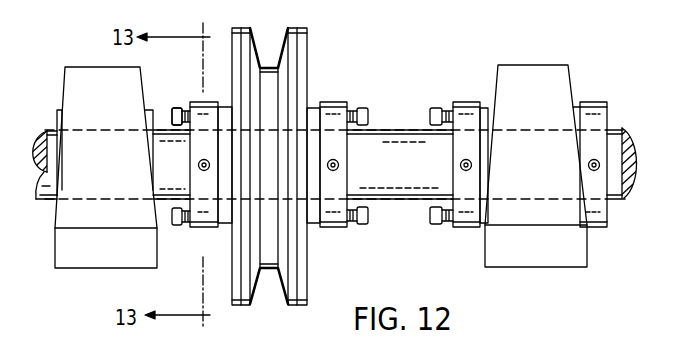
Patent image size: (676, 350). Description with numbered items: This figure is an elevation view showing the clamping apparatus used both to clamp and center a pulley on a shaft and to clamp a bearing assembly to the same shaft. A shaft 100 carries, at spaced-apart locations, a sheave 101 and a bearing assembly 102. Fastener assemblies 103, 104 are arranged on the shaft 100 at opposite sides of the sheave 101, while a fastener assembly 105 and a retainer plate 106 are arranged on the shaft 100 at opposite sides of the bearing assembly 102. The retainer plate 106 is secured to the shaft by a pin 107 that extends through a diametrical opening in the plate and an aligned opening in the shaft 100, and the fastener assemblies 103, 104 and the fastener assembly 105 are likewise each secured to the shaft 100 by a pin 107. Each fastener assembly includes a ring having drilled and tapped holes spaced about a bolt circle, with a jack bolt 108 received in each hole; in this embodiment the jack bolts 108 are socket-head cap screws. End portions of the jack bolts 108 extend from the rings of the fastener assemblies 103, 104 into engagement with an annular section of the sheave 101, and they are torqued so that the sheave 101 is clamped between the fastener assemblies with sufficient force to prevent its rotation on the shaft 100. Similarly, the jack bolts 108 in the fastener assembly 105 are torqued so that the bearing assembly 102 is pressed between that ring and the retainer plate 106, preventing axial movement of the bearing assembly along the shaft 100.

The shaft 100 is at (408, 201).
The sheave 101 is at (307, 55).
The bearing assembly 102 is at (525, 64).
The fastener assembly 103 is at (207, 228).
The fastener assembly 104 is at (340, 102).
The fastener assembly 105 is at (465, 102).
The retainer plate 106 is at (592, 103).
The pin 107 is at (198, 167).
The jack bolt 108 is at (173, 110).